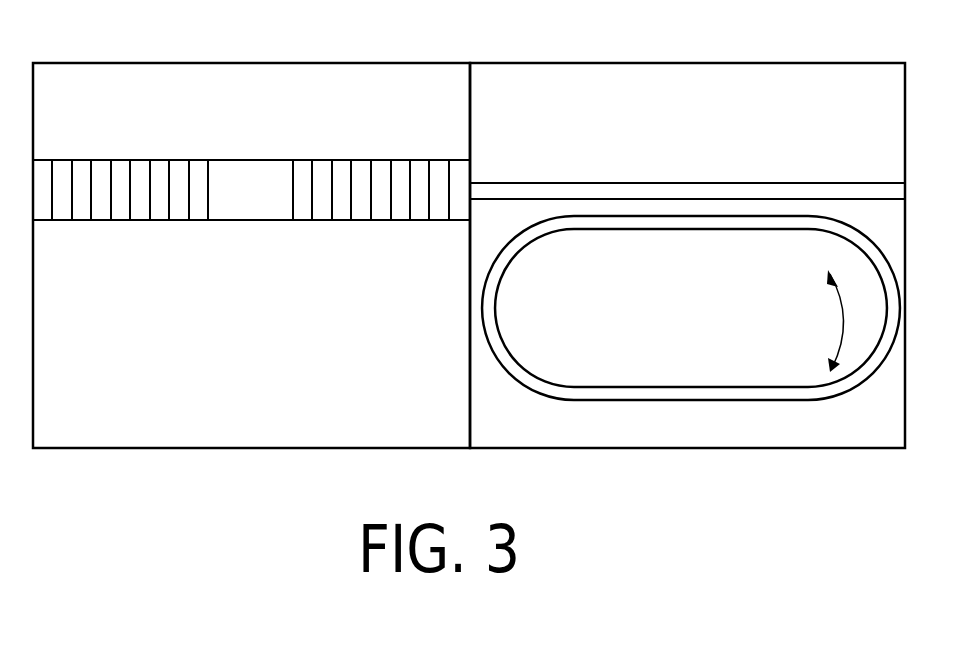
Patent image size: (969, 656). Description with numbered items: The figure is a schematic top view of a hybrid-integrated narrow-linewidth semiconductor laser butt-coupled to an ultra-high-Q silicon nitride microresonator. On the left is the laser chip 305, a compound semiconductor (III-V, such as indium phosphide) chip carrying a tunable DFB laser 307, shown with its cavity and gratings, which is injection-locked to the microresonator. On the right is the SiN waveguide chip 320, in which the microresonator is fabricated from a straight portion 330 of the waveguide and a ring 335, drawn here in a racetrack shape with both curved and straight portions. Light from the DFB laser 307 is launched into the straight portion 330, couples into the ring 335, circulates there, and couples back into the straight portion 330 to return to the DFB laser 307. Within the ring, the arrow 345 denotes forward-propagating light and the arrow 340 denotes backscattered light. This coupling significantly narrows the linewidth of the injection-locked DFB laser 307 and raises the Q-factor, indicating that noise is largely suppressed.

The laser chip 305 is at (124, 62).
The DFB laser 307 is at (254, 156).
The SiN waveguide chip 320 is at (787, 63).
The straight portion of the waveguide 330 is at (535, 183).
The ring 335 is at (587, 385).
The arrow denoting backscattered light 340 is at (827, 347).
The arrow denoting forward-propagating light 345 is at (825, 245).